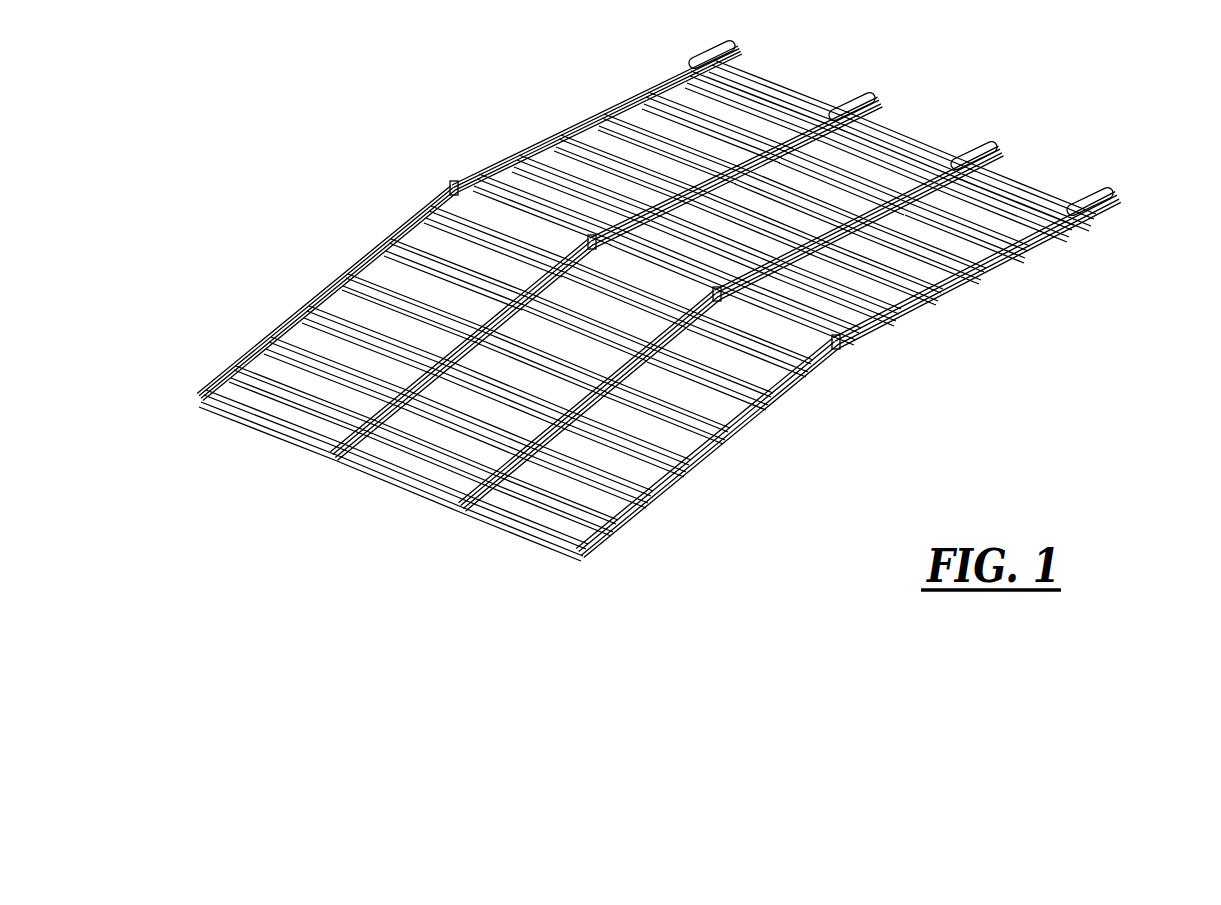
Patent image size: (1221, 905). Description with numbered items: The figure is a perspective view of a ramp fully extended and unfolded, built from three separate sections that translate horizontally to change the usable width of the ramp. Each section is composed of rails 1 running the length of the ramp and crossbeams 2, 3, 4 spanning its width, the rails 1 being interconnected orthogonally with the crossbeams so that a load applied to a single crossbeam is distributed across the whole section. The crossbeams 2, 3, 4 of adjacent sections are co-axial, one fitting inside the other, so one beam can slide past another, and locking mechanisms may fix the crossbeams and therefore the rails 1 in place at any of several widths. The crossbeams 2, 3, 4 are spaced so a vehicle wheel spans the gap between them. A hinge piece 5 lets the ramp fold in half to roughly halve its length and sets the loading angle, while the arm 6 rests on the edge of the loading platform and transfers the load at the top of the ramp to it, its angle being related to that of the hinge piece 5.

The rail 1 is at (490, 163).
The crossbeam 2 is at (323, 393).
The crossbeam 3 is at (412, 471).
The crossbeam 4 is at (553, 525).
The hinge piece 5 is at (843, 344).
The arm 6 is at (1007, 150).